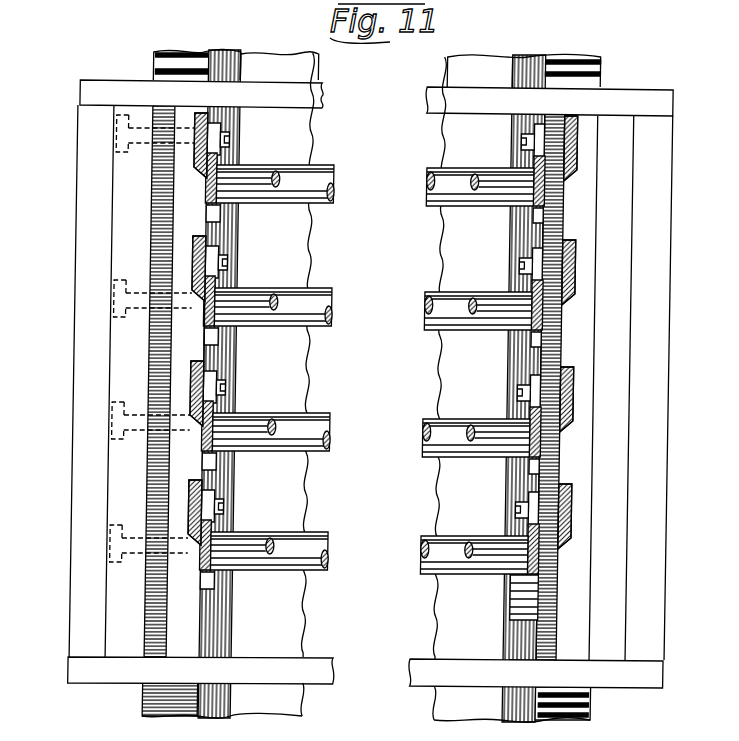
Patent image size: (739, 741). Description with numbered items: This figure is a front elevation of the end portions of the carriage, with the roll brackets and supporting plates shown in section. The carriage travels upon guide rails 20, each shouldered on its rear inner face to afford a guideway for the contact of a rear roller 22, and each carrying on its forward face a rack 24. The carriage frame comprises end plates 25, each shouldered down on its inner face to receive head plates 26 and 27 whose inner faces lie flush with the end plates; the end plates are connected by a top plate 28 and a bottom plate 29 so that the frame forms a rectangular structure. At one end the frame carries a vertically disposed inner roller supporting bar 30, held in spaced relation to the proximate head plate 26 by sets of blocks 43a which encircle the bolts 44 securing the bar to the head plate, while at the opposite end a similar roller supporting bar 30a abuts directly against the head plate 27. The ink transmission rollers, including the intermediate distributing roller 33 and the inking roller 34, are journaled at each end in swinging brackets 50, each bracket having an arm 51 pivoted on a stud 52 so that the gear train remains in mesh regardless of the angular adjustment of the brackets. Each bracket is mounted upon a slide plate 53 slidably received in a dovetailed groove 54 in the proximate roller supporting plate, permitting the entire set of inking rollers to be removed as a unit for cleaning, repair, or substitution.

The guide rail 20 is at (228, 623).
The rear roller 22 is at (228, 578).
The rack 24 is at (150, 702).
The end plate 25 is at (83, 398).
The head plate 26 is at (142, 381).
The head plate 27 is at (428, 386).
The top plate 28 is at (115, 88).
The bottom plate 29 is at (112, 670).
The inner roller supporting bar 30 is at (191, 330).
The roller supporting bar 30a is at (567, 386).
The intermediate distributing roller 33 is at (243, 182).
The inking roller 34 is at (314, 176).
The block 43a is at (160, 302).
The bolt 44 is at (158, 299).
The swinging bracket 50 is at (215, 183).
The arm 51 is at (212, 135).
The stud 52 is at (227, 141).
The slide plate 53 is at (194, 153).
The dovetailed groove 54 is at (196, 166).